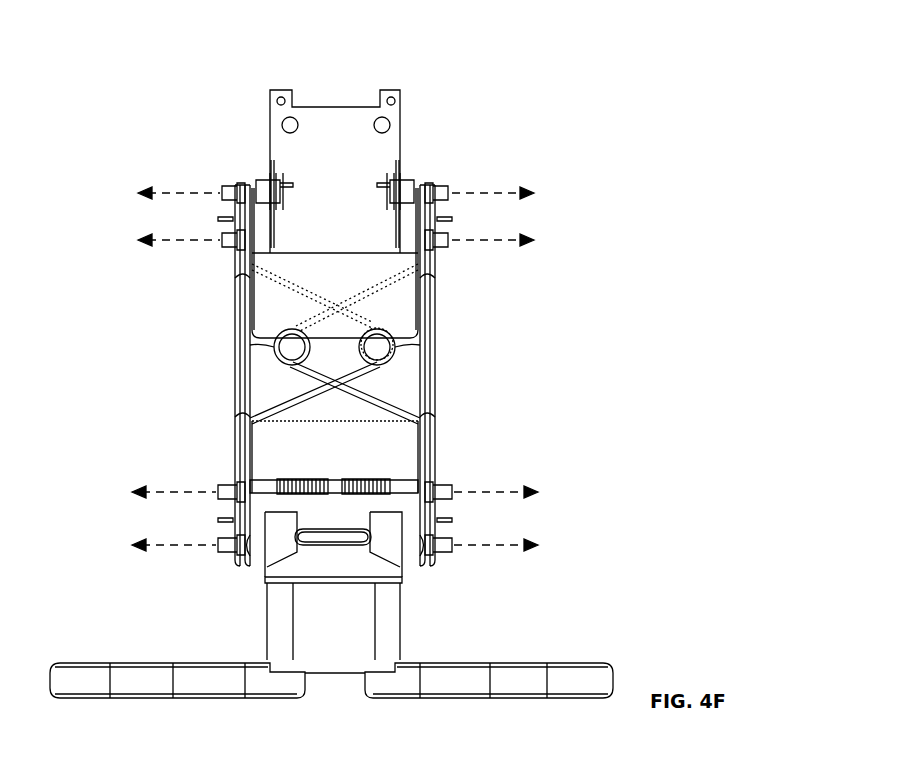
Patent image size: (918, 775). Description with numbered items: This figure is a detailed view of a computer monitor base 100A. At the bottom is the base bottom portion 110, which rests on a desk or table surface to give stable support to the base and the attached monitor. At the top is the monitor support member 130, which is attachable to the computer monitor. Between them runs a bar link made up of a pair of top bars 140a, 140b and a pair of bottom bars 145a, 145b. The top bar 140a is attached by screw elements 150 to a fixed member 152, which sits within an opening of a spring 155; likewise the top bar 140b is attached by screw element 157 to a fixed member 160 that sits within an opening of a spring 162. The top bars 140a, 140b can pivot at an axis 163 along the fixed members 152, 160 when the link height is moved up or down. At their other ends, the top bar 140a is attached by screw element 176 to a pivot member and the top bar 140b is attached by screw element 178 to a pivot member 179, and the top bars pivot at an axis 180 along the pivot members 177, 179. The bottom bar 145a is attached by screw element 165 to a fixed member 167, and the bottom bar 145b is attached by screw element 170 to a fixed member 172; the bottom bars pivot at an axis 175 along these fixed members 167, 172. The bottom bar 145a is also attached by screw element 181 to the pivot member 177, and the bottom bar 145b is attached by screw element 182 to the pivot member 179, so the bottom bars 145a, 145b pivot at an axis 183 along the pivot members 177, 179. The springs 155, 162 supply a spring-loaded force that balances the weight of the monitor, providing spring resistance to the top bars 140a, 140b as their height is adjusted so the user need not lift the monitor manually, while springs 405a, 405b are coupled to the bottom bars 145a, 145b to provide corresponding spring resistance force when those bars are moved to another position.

The computer monitor base 100A is at (556, 128).
The base bottom portion 110 is at (537, 663).
The monitor support member 130 is at (323, 110).
The top bar 140a is at (240, 383).
The top bar 140b is at (430, 383).
The bottom bar 145a is at (238, 307).
The bottom bar 145b is at (432, 307).
The screw elements 150 is at (224, 484).
The fixed member 152 is at (252, 480).
The spring 155 is at (310, 468).
The screw element 157 is at (446, 484).
The fixed member 160 is at (418, 480).
The spring 162 is at (367, 481).
The axis 163 is at (174, 492).
The screw element 165 is at (226, 538).
The fixed member 167 is at (250, 568).
The screw element 170 is at (448, 538).
The fixed member 172 is at (420, 568).
The axis 175 is at (182, 546).
The screw element 176 is at (229, 186).
The pivot member 177 is at (249, 186).
The screw element 178 is at (446, 186).
The pivot member 179 is at (424, 186).
The axis 180 is at (182, 193).
The screw element 181 is at (230, 252).
The screw element 182 is at (440, 252).
The axis 183 is at (148, 240).
The spring 405a is at (274, 348).
The spring 405b is at (395, 348).